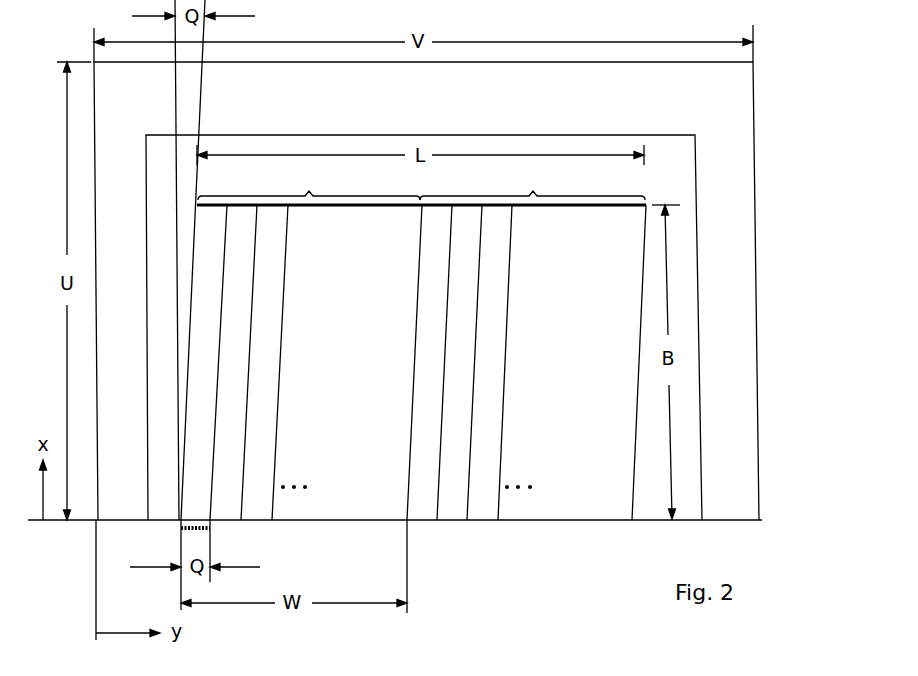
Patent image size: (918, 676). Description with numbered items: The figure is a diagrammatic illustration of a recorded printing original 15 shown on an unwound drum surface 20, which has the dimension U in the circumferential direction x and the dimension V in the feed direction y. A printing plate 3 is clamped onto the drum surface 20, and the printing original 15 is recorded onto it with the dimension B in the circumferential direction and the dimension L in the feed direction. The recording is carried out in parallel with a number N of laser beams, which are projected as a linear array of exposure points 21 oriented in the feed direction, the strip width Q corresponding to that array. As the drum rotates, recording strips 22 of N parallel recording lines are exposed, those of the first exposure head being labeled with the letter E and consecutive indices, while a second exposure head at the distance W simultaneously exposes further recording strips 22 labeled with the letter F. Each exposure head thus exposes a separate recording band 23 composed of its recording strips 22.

The drum surface 20 is at (718, 92).
The printing plate 3 is at (685, 163).
The printing original 15 is at (615, 447).
The recording band 23 is at (421, 187).
The recording strips 22 is at (212, 257).
The exposure points 21 is at (195, 537).